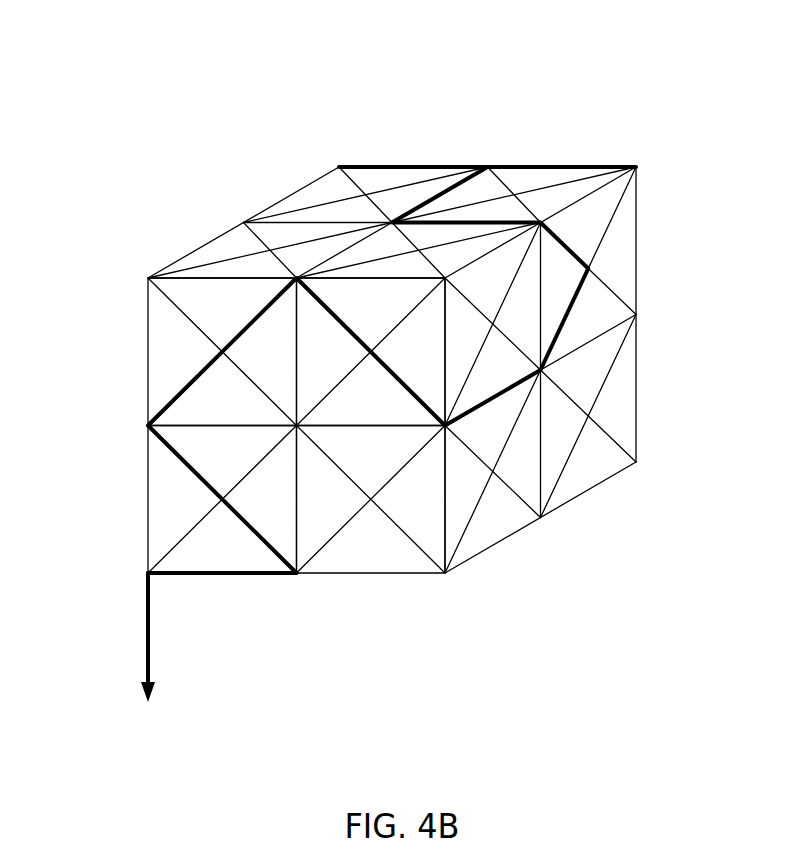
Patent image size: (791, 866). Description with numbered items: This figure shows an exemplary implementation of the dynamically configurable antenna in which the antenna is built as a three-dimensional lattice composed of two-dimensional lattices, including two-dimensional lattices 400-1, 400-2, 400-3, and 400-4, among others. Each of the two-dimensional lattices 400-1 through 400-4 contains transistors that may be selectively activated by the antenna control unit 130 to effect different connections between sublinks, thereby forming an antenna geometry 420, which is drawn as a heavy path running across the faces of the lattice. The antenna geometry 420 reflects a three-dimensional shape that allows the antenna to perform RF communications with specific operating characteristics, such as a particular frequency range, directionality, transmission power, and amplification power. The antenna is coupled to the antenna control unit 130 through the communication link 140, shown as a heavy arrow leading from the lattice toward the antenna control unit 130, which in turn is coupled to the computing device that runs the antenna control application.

The antenna geometry 420 is at (403, 166).
The 2D lattice 400-1 is at (222, 352).
The 2D lattice 400-2 is at (371, 352).
The 2D lattice 400-3 is at (222, 500).
The 2D lattice 400-4 is at (371, 500).
The communication link 140 is at (148, 648).
The antenna control unit 130 is at (131, 816).